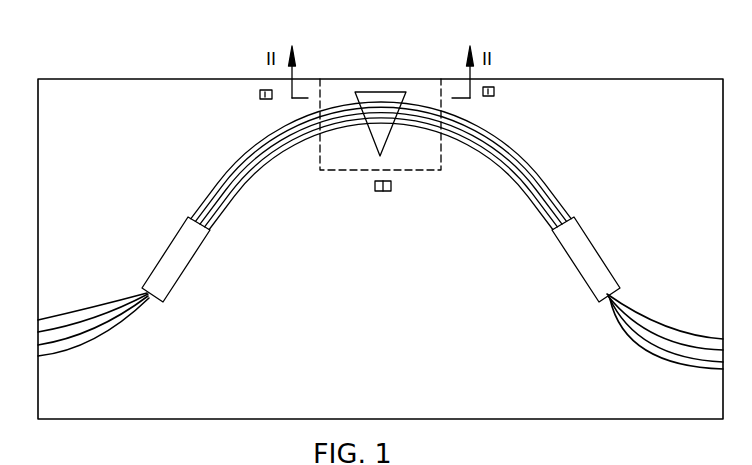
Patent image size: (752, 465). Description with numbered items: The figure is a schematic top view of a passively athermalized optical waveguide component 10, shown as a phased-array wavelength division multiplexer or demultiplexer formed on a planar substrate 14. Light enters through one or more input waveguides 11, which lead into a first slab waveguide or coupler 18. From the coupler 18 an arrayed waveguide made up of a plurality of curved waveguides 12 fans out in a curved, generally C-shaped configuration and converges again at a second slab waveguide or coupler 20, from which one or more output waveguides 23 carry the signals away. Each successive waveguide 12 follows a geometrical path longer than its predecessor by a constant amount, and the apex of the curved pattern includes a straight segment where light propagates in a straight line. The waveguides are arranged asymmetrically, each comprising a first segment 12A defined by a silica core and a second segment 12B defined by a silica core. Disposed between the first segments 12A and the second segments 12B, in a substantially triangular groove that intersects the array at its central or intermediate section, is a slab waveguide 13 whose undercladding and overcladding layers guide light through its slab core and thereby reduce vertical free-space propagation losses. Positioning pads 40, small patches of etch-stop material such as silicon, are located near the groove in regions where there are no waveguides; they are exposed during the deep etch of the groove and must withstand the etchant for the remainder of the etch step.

The passively athermalized optical waveguide component 10 is at (617, 47).
The input waveguides 11 is at (87, 347).
The curved waveguides 12 is at (338, 104).
The first waveguide segment 12A is at (241, 158).
The second waveguide segment 12B is at (457, 113).
The slab waveguide 13 is at (380, 100).
The planar substrate 14 is at (655, 166).
The first slab waveguide or coupler 18 is at (173, 251).
The second slab waveguide or coupler 20 is at (590, 251).
The output waveguides 23 is at (656, 337).
The positioning pads 40 is at (263, 89).